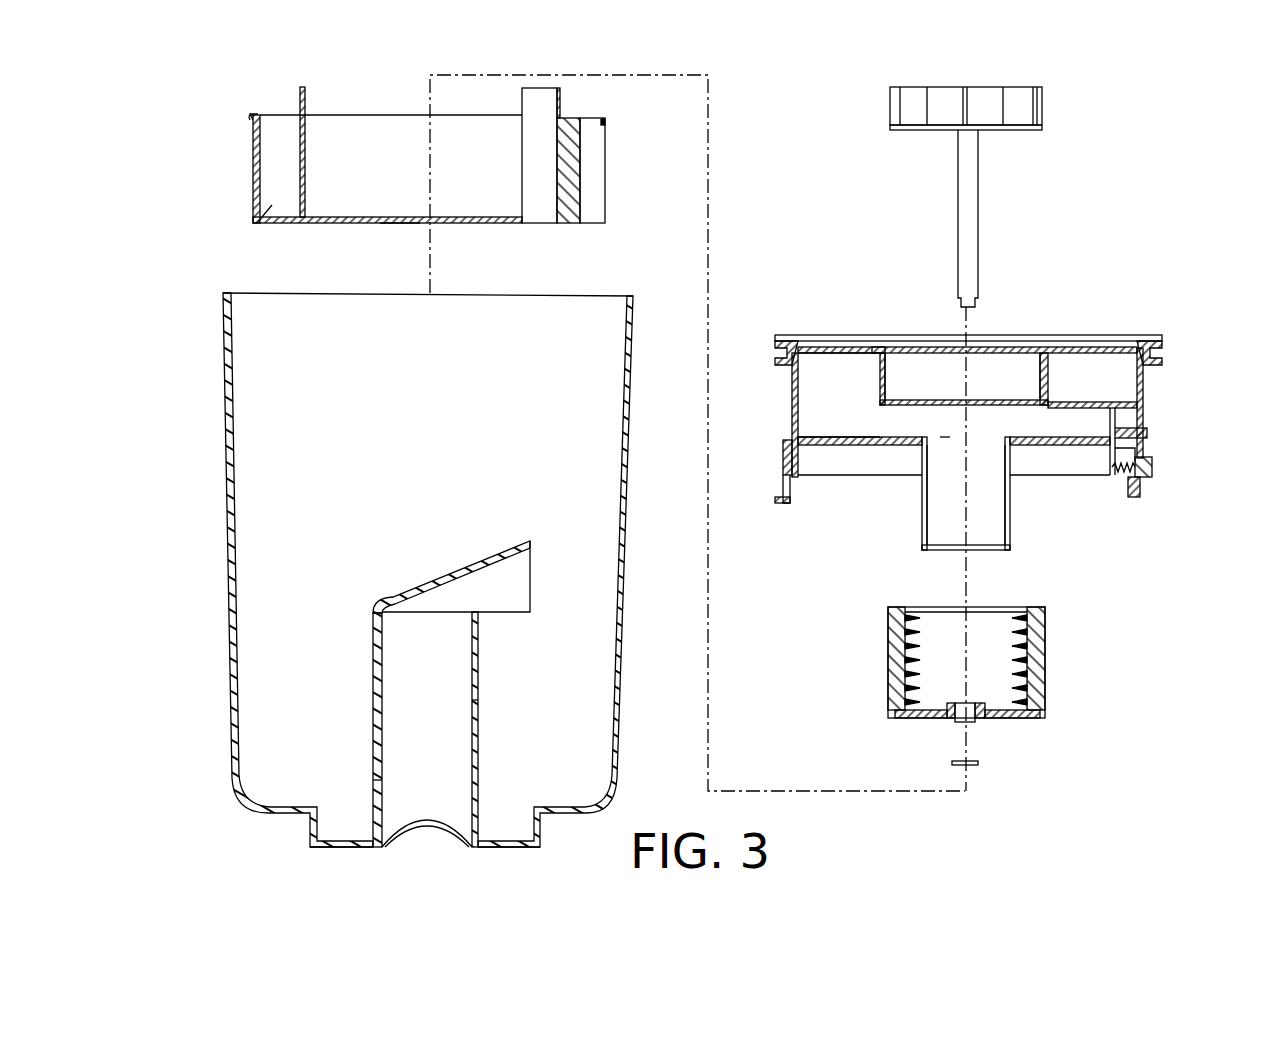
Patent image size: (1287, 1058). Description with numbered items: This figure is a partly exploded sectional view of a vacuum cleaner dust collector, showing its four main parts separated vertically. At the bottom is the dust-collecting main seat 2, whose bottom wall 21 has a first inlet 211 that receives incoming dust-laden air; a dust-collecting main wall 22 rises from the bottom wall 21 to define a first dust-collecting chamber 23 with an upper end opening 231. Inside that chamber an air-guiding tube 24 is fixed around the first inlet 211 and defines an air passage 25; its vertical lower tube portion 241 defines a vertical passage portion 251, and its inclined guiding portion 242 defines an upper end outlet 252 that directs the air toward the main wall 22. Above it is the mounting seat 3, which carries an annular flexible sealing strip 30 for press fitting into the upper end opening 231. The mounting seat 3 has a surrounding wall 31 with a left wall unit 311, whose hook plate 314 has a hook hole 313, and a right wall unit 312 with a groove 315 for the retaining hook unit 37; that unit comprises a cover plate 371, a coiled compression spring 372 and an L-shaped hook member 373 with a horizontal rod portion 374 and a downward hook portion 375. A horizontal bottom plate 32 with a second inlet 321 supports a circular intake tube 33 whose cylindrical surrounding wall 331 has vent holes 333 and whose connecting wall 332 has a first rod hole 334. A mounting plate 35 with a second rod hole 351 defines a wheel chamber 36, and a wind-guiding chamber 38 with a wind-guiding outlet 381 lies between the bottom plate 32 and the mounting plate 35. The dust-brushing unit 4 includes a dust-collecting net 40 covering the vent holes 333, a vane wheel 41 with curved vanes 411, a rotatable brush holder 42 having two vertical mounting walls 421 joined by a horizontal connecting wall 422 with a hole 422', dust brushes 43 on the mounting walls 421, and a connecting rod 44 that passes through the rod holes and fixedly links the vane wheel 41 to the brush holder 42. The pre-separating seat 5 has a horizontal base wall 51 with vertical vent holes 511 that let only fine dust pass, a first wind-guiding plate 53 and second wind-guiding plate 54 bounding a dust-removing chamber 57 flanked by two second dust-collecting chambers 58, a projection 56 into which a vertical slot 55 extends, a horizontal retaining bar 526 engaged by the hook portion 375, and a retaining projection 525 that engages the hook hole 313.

The dust-collecting main seat 2 is at (420, 573).
The bottom wall 21 is at (333, 848).
The first inlet 211 is at (430, 828).
The dust-collecting main wall 22 is at (622, 678).
The first dust-collecting chamber 23 is at (265, 400).
The upper end opening 231 is at (572, 305).
The air-guiding tube 24 is at (368, 657).
The vertical lower tube portion 241 is at (377, 773).
The inclined guiding portion 242 is at (493, 550).
The air passage 25 is at (396, 733).
The vertical passage portion 251 is at (447, 713).
The upper end outlet 252 is at (520, 590).
The mounting seat 3 is at (980, 417).
The annular flexible sealing strip 30 is at (1012, 322).
The surrounding wall 31 is at (926, 426).
The left wall unit 311 is at (792, 412).
The right wall unit 312 is at (1150, 352).
The hook hole 313 is at (785, 480).
The hook plate 314 is at (785, 503).
The groove 315 is at (1120, 452).
The horizontal bottom plate 32 is at (825, 447).
The second inlet 321 is at (943, 437).
The circular intake tube 33 is at (988, 417).
The cylindrical surrounding wall 331 is at (921, 530).
The connecting wall 332 is at (995, 555).
The vent holes 333 is at (921, 500).
The first rod hole 334 is at (960, 553).
The mounting plate 35 is at (815, 346).
The second rod hole 351 is at (970, 395).
The wheel chamber 36 is at (1020, 365).
The retaining hook unit 37 is at (1158, 464).
The cover plate 371 is at (1145, 428).
The coiled compression spring 372 is at (1125, 472).
The hook member 373 is at (1153, 478).
The horizontal rod portion 374 is at (1155, 465).
The hook portion 375 is at (1140, 498).
The wind-guiding chamber 38 is at (818, 400).
The wind-guiding outlet 381 is at (888, 370).
The dust-collecting net 40 is at (1010, 530).
The dust-brushing unit 4 is at (1019, 185).
The vane wheel 41 is at (1000, 97).
The curved vanes 411 is at (1008, 97).
The rotatable brush holder 42 is at (972, 693).
The vertical mounting walls 421 is at (889, 655).
The horizontal connecting wall 422 is at (931, 739).
The hole 422' is at (1007, 752).
The dust brushes 43 is at (890, 718).
The connecting rod 44 is at (970, 175).
The pre-separating seat 5 is at (427, 168).
The horizontal base wall 51 is at (312, 223).
The vertical vent holes 511 is at (398, 238).
The retaining projection 525 is at (256, 120).
The horizontal retaining bar 526 is at (606, 124).
The first wind-guiding plate 53 is at (305, 92).
The second wind-guiding plate 54 is at (560, 95).
The vertical slot 55 is at (598, 225).
The projection 56 is at (580, 175).
The dust-removing chamber 57 is at (390, 140).
The second dust-collecting chambers 58 is at (268, 210).